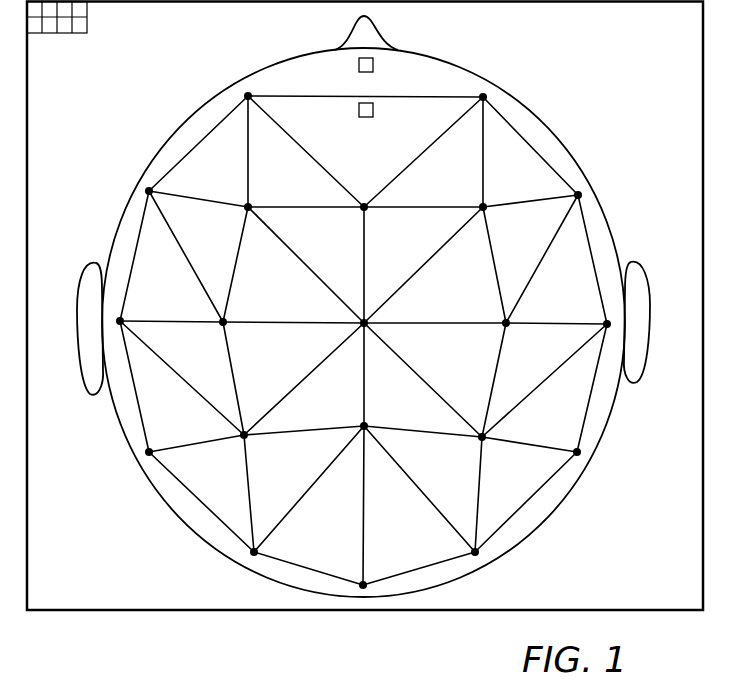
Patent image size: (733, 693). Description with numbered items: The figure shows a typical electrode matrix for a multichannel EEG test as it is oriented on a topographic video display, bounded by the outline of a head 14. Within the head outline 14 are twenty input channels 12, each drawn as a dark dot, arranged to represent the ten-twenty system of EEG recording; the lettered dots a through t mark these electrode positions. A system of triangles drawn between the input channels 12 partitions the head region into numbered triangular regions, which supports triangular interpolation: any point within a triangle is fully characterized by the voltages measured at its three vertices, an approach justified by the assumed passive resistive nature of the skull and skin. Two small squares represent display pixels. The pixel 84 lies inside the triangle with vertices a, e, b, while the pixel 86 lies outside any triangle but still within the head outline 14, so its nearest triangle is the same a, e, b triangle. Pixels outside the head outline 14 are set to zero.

The input channels 12 is at (475, 553).
The head outline 14 is at (565, 150).
The pixel 84 is at (367, 108).
The pixel 86 is at (370, 59).